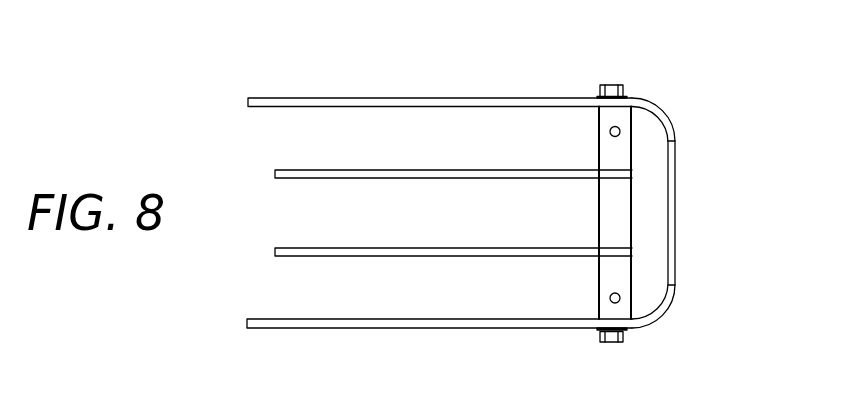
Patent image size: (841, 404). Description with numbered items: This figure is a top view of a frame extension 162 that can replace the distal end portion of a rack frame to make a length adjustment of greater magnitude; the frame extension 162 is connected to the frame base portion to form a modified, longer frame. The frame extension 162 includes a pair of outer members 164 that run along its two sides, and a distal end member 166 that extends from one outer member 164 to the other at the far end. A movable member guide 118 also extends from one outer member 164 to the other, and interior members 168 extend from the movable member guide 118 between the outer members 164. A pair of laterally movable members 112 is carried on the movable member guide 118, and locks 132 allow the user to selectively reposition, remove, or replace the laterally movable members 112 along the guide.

The frame extension 162 is at (311, 80).
The outer members 164 is at (394, 97).
The interior members 168 is at (480, 170).
The distal end member 166 is at (676, 192).
The movable member guide 118 is at (598, 228).
The locks 132 is at (609, 131).
The laterally movable members 112 is at (616, 85).